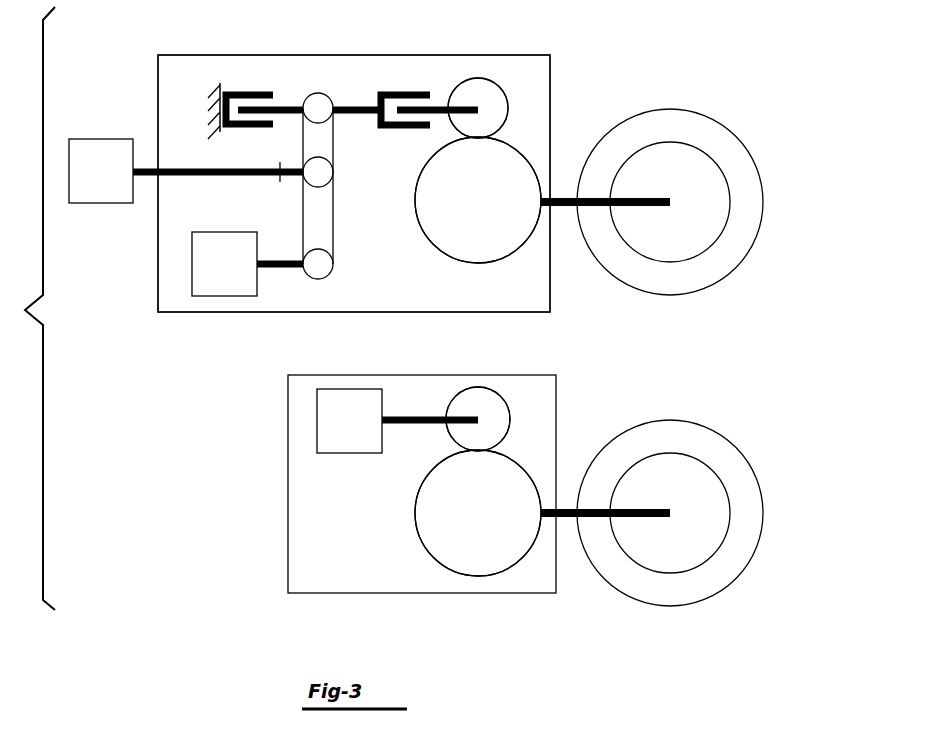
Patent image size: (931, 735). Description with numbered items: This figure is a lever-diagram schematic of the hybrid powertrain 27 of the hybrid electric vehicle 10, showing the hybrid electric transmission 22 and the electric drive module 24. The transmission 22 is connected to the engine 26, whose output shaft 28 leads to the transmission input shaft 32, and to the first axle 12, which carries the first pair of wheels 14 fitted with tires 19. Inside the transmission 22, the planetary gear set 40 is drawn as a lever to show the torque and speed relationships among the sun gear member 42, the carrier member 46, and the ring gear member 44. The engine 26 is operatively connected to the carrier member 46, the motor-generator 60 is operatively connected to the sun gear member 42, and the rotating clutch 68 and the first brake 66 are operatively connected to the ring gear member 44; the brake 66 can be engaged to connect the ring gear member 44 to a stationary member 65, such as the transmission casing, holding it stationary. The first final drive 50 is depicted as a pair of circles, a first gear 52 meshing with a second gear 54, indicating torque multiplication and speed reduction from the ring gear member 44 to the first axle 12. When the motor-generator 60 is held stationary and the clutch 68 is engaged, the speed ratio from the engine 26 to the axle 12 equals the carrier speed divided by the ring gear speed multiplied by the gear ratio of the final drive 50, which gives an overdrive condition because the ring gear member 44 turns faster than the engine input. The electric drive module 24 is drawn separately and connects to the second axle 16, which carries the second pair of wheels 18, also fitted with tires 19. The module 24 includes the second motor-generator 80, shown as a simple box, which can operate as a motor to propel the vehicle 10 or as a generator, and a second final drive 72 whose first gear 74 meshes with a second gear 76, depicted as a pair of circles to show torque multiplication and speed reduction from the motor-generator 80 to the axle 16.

The hybrid electric vehicle 10 is at (568, 31).
The first axle 12 is at (561, 196).
The first pair of wheels 14 is at (671, 142).
The second axle 16 is at (569, 506).
The second pair of wheels 18 is at (670, 453).
The tires 19 is at (763, 202).
The hybrid electric transmission 22 is at (202, 312).
The electric drive module 24 is at (288, 484).
The engine 26 is at (110, 185).
The hybrid powertrain 27 is at (125, 82).
The output shaft 28 is at (278, 172).
The input shaft 32 is at (286, 178).
The planetary gear set 40 is at (333, 218).
The sun gear member 42 is at (333, 264).
The ring gear member 44 is at (322, 93).
The carrier member 46 is at (333, 172).
The first final drive 50 is at (512, 130).
The first gear 52 is at (478, 78).
The second gear 54 is at (488, 213).
The motor-generator 60 is at (233, 275).
The stationary member 65 is at (214, 88).
The first brake 66 is at (282, 90).
The rotating clutch 68 is at (432, 82).
The second final drive 72 is at (510, 445).
The first gear 74 is at (478, 387).
The second gear 76 is at (488, 526).
The second motor-generator 80 is at (358, 433).